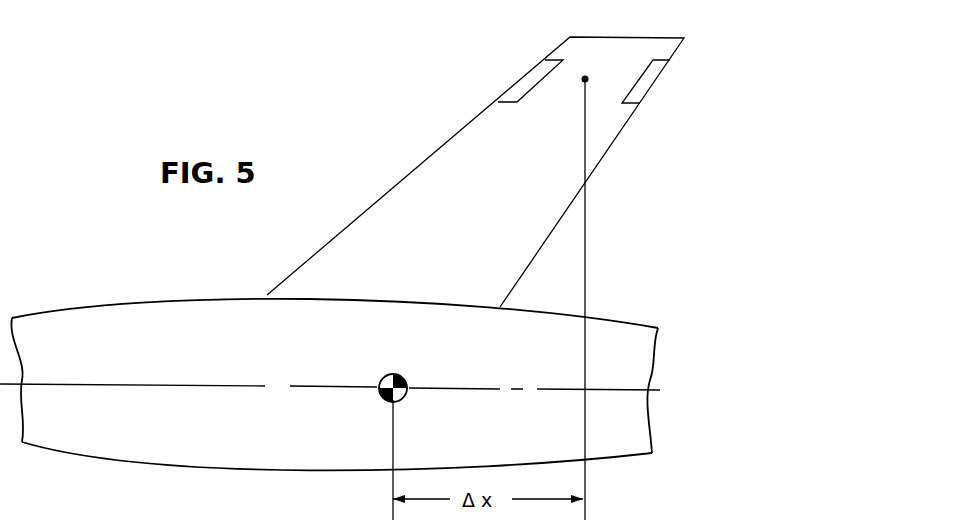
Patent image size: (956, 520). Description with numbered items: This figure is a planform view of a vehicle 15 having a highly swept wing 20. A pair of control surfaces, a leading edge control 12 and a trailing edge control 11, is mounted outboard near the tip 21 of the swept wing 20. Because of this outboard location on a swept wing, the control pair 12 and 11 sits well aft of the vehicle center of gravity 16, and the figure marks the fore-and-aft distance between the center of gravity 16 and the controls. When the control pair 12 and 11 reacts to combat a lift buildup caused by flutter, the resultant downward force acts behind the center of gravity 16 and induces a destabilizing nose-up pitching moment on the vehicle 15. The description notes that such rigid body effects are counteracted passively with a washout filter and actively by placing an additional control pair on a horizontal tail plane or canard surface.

The trailing edge control 11 is at (655, 87).
The leading edge control 12 is at (522, 81).
The vehicle 15 is at (197, 351).
The vehicle center of gravity 16 is at (401, 378).
The swept wing 20 is at (472, 223).
The tip 21 is at (607, 35).